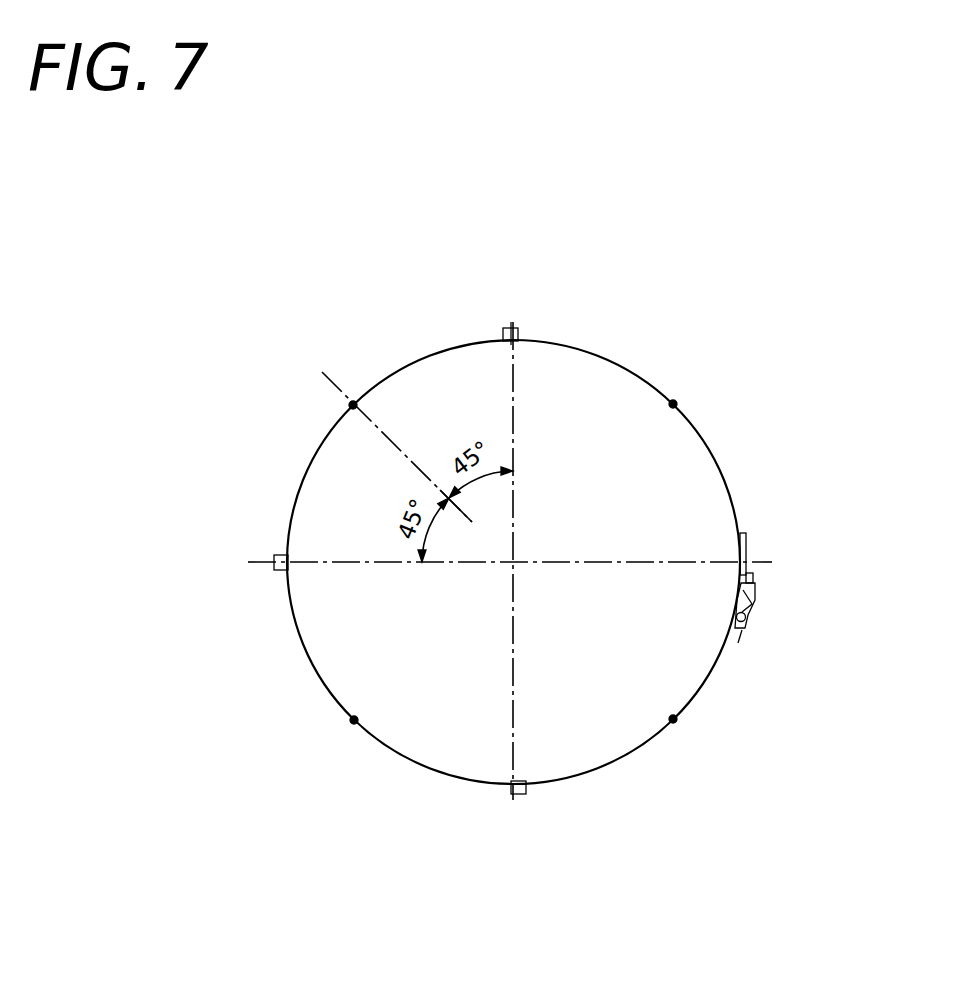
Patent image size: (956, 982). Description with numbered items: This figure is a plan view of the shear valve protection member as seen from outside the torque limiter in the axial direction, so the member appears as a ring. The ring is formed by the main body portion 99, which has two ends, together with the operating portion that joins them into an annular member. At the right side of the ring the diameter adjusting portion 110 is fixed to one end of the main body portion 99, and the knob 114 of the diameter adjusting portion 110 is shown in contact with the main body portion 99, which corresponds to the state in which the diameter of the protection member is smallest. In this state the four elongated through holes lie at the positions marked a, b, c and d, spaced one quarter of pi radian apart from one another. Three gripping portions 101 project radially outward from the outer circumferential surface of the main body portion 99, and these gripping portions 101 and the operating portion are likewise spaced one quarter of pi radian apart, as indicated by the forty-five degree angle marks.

The main body portion 99 is at (622, 757).
The gripping portions 101 is at (518, 333).
The diameter adjusting portion 110 is at (753, 605).
The knob 114 is at (750, 622).
The through hole position a is at (677, 400).
The through hole position b is at (353, 401).
The through hole position c is at (351, 724).
The through hole position d is at (677, 717).